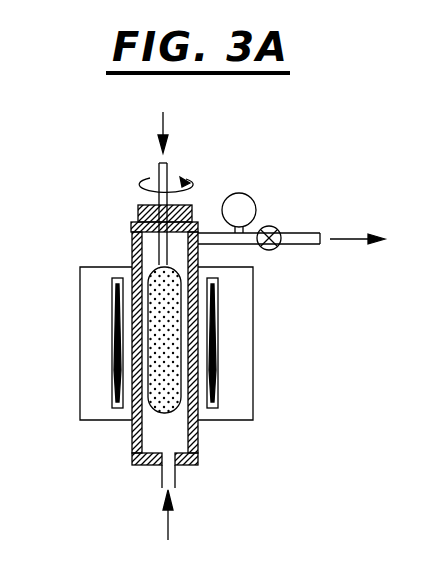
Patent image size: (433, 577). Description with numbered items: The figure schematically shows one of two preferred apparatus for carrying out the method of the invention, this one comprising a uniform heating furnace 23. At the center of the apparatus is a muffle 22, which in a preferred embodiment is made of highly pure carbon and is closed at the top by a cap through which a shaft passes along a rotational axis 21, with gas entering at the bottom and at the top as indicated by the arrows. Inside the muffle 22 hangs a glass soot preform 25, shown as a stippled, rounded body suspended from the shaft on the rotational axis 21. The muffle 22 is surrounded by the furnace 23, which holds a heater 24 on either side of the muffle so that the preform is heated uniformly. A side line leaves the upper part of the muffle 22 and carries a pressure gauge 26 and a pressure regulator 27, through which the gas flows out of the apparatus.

The rotational axis 21 is at (168, 173).
The muffle 22 is at (134, 440).
The furnace 23 is at (253, 355).
The heater 24 is at (112, 382).
The glass soot preform 25 is at (167, 415).
The pressure gauge 26 is at (253, 203).
The pressure regulator 27 is at (275, 252).